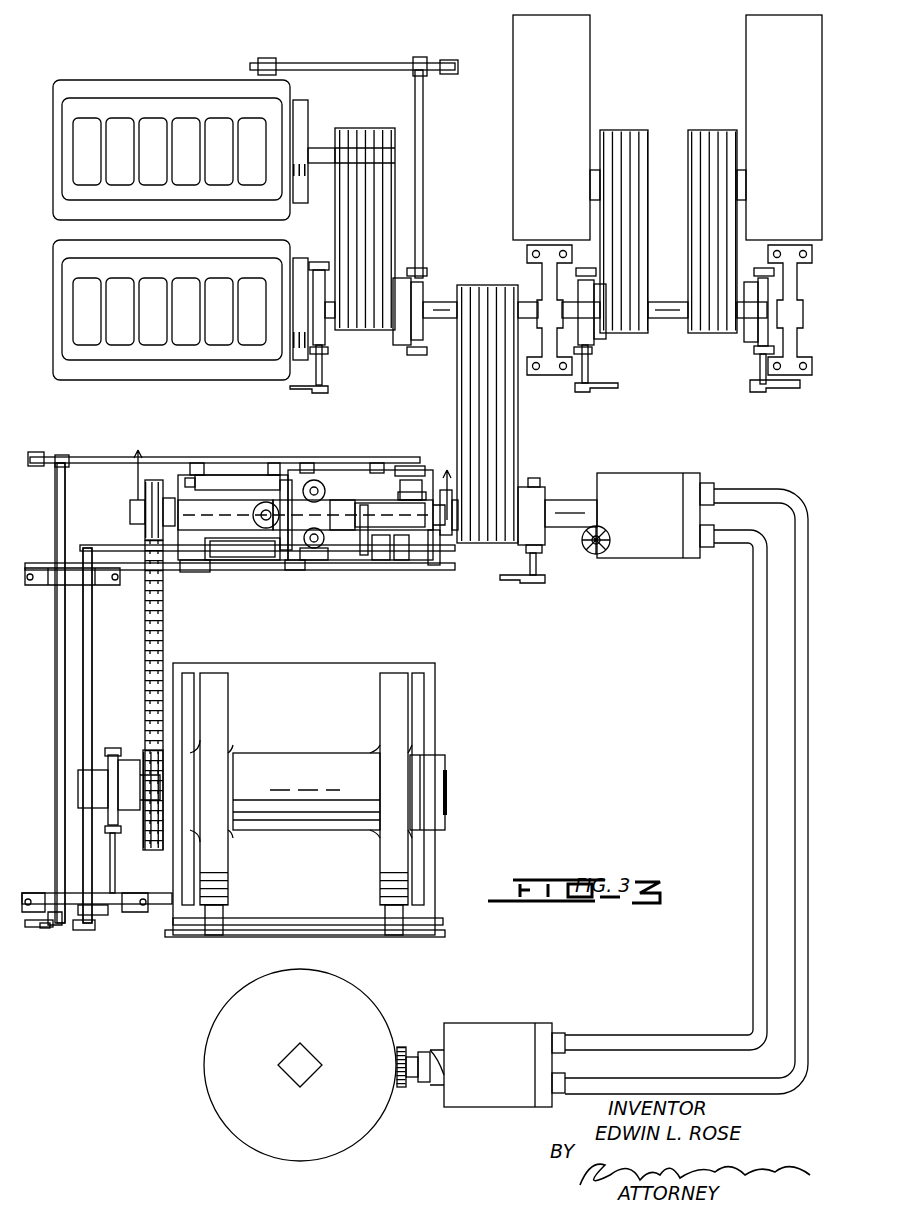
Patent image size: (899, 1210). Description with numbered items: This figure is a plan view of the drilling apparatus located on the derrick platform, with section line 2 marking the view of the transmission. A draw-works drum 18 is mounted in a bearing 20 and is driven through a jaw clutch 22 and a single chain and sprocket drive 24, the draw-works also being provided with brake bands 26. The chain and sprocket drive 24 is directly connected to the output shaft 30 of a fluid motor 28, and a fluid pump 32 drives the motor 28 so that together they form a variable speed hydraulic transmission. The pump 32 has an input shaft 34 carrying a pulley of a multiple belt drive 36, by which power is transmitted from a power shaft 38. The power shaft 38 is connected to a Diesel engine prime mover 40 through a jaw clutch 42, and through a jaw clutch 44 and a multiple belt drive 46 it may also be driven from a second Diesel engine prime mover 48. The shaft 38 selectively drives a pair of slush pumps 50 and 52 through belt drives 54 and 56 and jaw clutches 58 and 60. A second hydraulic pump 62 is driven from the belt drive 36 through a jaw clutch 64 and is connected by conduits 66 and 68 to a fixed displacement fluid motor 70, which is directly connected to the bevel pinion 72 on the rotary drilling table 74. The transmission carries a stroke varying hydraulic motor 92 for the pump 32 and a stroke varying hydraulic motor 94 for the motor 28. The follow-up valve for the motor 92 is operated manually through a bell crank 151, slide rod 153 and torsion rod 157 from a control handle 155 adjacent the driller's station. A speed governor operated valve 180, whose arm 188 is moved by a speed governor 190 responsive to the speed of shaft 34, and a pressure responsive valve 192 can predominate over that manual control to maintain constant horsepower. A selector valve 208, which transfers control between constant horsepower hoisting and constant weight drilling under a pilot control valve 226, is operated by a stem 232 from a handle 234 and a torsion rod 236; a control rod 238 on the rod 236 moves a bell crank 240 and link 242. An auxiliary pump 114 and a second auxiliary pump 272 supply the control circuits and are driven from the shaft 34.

The section line 2- 2 is at (292, 474).
The draw-works drum 18 is at (305, 800).
The bearing 20 is at (183, 820).
The jaw clutch 22 is at (125, 760).
The chain and sprocket drive 24 is at (168, 640).
The brake bands 26 is at (212, 690).
The fluid motor 28 is at (195, 485).
The output shaft 30 is at (140, 510).
The fluid pump 32 is at (350, 485).
The input shaft 34 is at (458, 540).
The multiple belt drive 36 is at (505, 440).
The power shaft 38 is at (437, 300).
The prime mover 40 is at (110, 352).
The jaw clutch 42 is at (318, 330).
The jaw clutch 44 is at (406, 345).
The multiple belt drive 46 is at (350, 247).
The second Diesel engine prime mover 48 is at (130, 108).
The slush pump 50 is at (556, 127).
The slush pump 52 is at (779, 127).
The belt drive 54 is at (630, 262).
The belt drive 56 is at (700, 264).
The jaw clutch 58 is at (598, 335).
The jaw clutch 60 is at (752, 328).
The second hydraulic pump 62 is at (648, 515).
The jaw clutch 64 is at (530, 490).
The conduit 66 is at (755, 655).
The conduit 68 is at (795, 735).
The fixed displacement fluid motor 70 is at (504, 1065).
The bevel pinion 72 is at (404, 1046).
The rotary drilling table 74 is at (300, 1065).
The stroke varying hydraulic motor 92 is at (390, 511).
The stroke varying hydraulic motor 94 is at (245, 510).
The auxiliary pump 114 is at (375, 558).
The bell crank 151 is at (410, 480).
The slide rod 153 is at (300, 470).
The control handle 155 is at (42, 928).
The torsion rod 157 is at (70, 498).
The speed governor operated valve 180 is at (310, 545).
The arm 188 is at (330, 543).
The speed governor 190 is at (352, 510).
The pressure responsive valve 192 is at (315, 486).
The selector valve 208 is at (242, 549).
The pilot control valve 226 is at (240, 485).
The stem 232 is at (185, 555).
The handle 234 is at (95, 918).
The torsion rod 236 is at (95, 668).
The control rod 238 is at (292, 570).
The bell crank 240 is at (385, 565).
The link 242 is at (435, 568).
The second auxiliary pump 272 is at (400, 562).